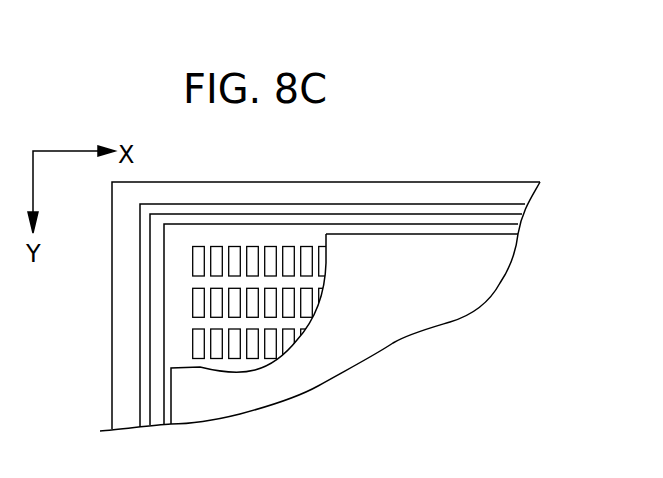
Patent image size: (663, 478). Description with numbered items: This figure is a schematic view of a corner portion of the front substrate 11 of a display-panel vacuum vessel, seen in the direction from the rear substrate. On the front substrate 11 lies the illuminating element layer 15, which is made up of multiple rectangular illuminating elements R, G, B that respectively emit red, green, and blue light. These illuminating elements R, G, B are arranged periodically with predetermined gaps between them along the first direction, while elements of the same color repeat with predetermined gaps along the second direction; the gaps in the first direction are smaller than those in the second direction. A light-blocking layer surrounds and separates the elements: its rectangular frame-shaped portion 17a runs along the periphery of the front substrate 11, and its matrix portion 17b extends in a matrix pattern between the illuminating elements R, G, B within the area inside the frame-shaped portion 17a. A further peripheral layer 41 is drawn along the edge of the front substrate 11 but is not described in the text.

The front substrate 11 is at (462, 193).
The sealing member 41 is at (407, 205).
The illuminating element layer 15 is at (308, 224).
The rectangular frame-shaped portion 17a is at (277, 231).
The matrix portion 17b is at (307, 282).
The red illuminating element R is at (197, 247).
The green illuminating element G is at (216, 247).
The blue illuminating element B is at (236, 247).